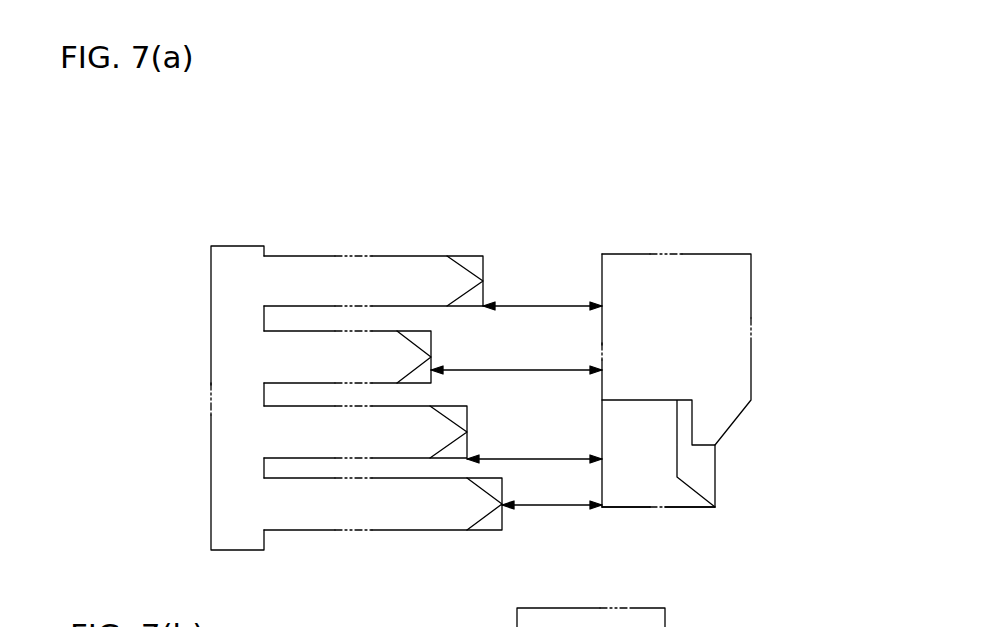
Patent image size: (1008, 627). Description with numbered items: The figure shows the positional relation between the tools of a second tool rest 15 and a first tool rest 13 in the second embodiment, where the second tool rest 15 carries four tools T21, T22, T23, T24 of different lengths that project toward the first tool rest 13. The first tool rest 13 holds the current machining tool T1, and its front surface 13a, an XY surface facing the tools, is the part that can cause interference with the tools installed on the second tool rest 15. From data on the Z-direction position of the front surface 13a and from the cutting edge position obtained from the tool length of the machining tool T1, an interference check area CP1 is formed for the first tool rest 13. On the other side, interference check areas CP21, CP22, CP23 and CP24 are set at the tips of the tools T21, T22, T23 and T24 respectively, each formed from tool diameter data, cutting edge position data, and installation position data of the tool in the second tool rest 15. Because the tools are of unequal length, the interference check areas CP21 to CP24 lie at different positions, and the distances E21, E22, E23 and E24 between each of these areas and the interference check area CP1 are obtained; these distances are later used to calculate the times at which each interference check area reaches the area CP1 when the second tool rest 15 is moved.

The second tool rest 15 is at (315, 252).
The first tool rest 13 is at (738, 370).
The front surface 13a is at (598, 265).
The current machining tool T1 is at (710, 478).
The interference check area CP1 is at (633, 507).
The tool T21 is at (389, 266).
The tool T22 is at (390, 349).
The tool T23 is at (411, 424).
The tool T24 is at (424, 515).
The interference check area CP21 is at (476, 266).
The interference check area CP22 is at (456, 349).
The interference check area CP23 is at (494, 424).
The interference check area CP24 is at (526, 515).
The distance E21 is at (542, 295).
The distance E22 is at (516, 357).
The distance E23 is at (534, 448).
The distance E24 is at (552, 494).